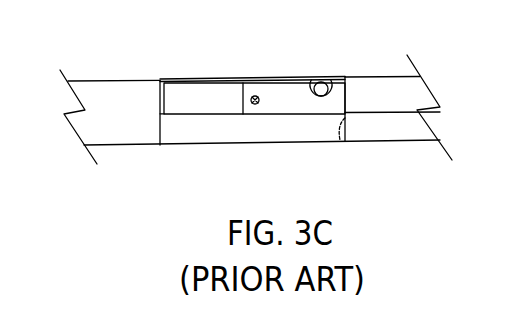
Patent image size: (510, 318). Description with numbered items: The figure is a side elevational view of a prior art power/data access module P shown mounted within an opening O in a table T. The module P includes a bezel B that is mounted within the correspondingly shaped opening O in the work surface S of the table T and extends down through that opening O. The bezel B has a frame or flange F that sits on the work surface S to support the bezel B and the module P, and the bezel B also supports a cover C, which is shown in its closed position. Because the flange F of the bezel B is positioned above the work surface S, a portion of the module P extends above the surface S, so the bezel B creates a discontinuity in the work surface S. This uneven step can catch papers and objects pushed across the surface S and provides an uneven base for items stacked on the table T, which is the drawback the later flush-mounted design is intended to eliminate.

The table T is at (117, 85).
The work surface S is at (137, 78).
The flange F is at (157, 79).
The cover C is at (299, 76).
The power/data access module P is at (344, 76).
The bezel B is at (337, 95).
The opening O is at (342, 120).